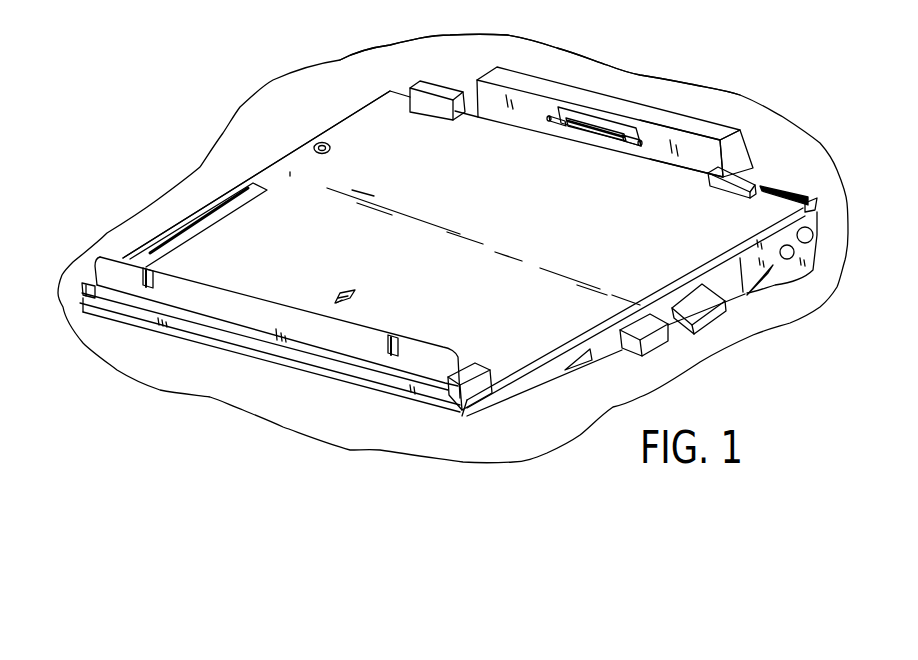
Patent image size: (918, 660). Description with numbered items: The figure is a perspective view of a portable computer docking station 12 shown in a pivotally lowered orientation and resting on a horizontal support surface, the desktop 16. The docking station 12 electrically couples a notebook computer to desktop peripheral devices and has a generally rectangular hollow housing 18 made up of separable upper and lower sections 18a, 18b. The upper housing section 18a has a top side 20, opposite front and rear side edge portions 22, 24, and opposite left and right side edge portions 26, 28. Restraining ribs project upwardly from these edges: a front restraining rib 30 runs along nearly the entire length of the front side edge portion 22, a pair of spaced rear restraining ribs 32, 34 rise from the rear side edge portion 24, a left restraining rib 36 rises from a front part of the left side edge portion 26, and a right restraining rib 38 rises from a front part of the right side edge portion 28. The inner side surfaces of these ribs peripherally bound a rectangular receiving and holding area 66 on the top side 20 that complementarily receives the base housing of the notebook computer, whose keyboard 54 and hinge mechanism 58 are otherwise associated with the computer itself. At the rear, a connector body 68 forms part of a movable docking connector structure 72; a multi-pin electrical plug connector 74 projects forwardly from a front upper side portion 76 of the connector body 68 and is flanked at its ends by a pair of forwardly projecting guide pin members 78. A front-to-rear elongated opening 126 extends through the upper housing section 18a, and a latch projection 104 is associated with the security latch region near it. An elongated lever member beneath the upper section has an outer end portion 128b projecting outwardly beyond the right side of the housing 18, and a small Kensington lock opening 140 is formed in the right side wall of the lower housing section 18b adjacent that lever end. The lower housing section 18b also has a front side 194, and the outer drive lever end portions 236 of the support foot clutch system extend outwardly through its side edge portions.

The docking station 12 is at (480, 42).
The desktop 16 is at (165, 368).
The housing 18 is at (322, 120).
The upper housing section 18a is at (290, 172).
The lower housing section 18b is at (536, 384).
The top side 20 is at (488, 217).
The front side edge portion 22 is at (309, 367).
The rear side edge portion 24 is at (783, 181).
The left side edge portion 26 is at (276, 164).
The right side edge portion 28 is at (735, 257).
The front restraining rib 30 is at (250, 321).
The rear restraining rib 32 is at (430, 113).
The rear restraining rib 34 is at (730, 193).
The left restraining rib 36 is at (207, 219).
The right restraining rib 38 is at (468, 378).
The keyboard 54 is at (777, 285).
The hinge mechanism 58 is at (820, 213).
The receiving and holding area 66 is at (333, 163).
The connector body 68 is at (660, 102).
The movable docking connector structure 72 is at (550, 70).
The multi-pin electrical plug connector 74 is at (601, 118).
The front upper side portion 76 is at (704, 150).
The guide pin members 78 is at (548, 118).
The hook 104 is at (337, 290).
The opening 126 is at (351, 292).
The outer end portion of lever member 128b is at (641, 341).
The Kensington lock opening 140 is at (808, 280).
The front side 194 is at (419, 402).
The outer drive lever end portions 236 is at (712, 318).